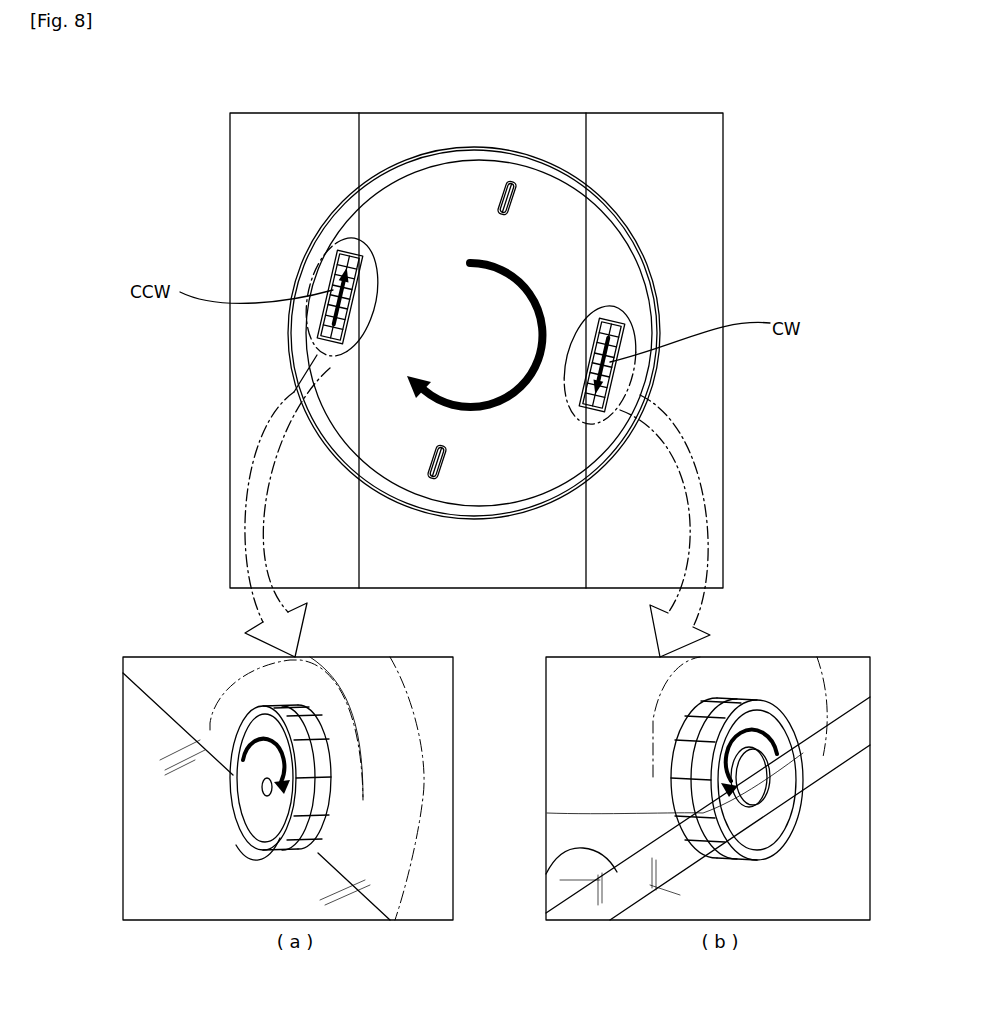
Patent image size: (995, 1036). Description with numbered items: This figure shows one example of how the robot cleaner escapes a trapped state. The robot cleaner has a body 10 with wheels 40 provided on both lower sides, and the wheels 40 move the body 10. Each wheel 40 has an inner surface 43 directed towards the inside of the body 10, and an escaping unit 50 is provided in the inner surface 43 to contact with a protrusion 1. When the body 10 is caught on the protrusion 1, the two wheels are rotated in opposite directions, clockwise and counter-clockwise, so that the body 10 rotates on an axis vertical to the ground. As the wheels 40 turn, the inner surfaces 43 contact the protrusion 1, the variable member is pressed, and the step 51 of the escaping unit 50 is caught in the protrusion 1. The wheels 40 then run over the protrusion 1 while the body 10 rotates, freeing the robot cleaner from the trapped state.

The body 10 is at (447, 180).
The protrusion 1 is at (158, 705).
The wheel 40 is at (327, 820).
The inner surface 43 is at (253, 762).
The escaping unit 50 is at (280, 827).
The step 51 is at (680, 820).